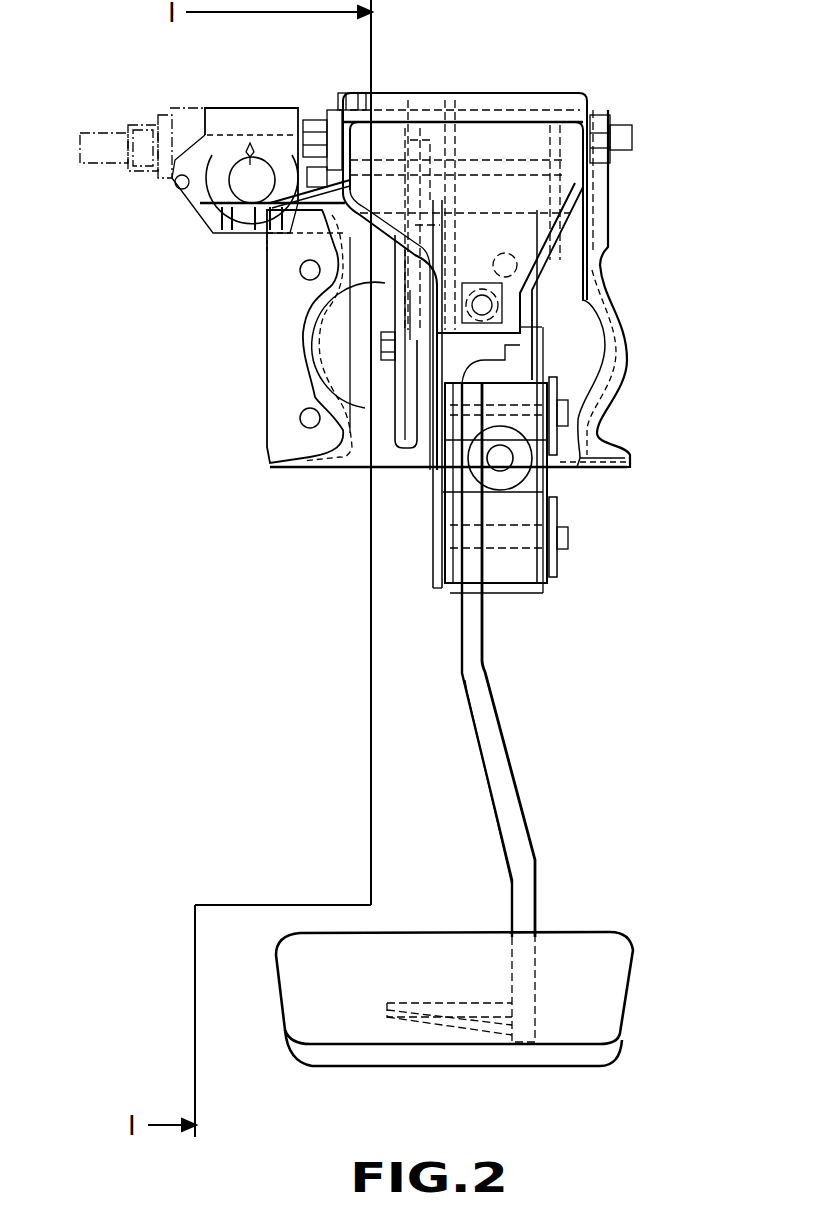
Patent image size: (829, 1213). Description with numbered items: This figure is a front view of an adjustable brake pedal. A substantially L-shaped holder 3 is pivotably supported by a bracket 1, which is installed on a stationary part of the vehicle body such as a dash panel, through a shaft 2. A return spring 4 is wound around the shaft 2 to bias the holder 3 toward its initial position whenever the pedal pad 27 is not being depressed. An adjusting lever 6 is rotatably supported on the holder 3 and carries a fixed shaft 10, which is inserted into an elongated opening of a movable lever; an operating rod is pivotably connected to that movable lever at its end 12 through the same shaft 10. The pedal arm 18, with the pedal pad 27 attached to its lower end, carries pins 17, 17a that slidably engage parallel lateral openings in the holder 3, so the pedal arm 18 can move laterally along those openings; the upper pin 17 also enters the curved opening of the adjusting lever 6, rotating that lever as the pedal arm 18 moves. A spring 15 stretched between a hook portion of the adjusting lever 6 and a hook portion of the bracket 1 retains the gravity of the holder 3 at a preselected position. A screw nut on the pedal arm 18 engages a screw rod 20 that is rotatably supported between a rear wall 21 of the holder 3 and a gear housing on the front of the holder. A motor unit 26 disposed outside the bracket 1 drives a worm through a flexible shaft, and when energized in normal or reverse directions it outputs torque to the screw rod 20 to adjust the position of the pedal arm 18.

The bracket 1 is at (490, 100).
The shaft 2 is at (634, 136).
The holder 3 is at (553, 272).
The return spring 4 is at (362, 92).
The adjusting lever 6 is at (437, 578).
The shaft 10 is at (385, 347).
The end 12 is at (347, 375).
The spring 15 is at (440, 200).
The upper pin 17 is at (570, 420).
The pin 17a is at (568, 540).
The pedal arm 18 is at (500, 722).
The screw rod 20 is at (488, 455).
The rear wall 21 is at (540, 478).
The motor unit 26 is at (236, 138).
The pedal pad 27 is at (598, 945).